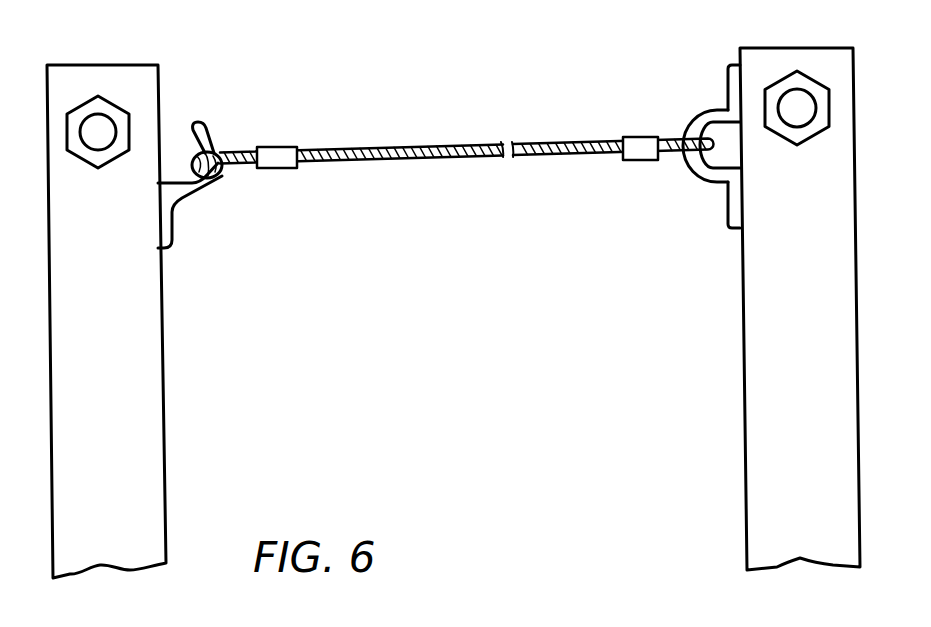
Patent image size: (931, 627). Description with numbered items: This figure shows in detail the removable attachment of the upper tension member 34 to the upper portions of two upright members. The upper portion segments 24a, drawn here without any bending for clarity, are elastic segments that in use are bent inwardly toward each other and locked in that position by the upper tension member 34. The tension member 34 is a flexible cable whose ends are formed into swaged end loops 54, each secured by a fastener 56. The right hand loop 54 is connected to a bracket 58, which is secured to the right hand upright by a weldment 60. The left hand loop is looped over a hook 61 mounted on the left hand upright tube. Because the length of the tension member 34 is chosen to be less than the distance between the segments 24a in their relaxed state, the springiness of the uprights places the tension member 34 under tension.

The upper portion segment 24a is at (128, 342).
The upper tension member 34 is at (423, 146).
The swaged end loop 54 is at (230, 177).
The fastener 56 is at (286, 170).
The bracket 58 is at (695, 113).
The weldment 60 is at (728, 83).
The hook 61 is at (209, 132).